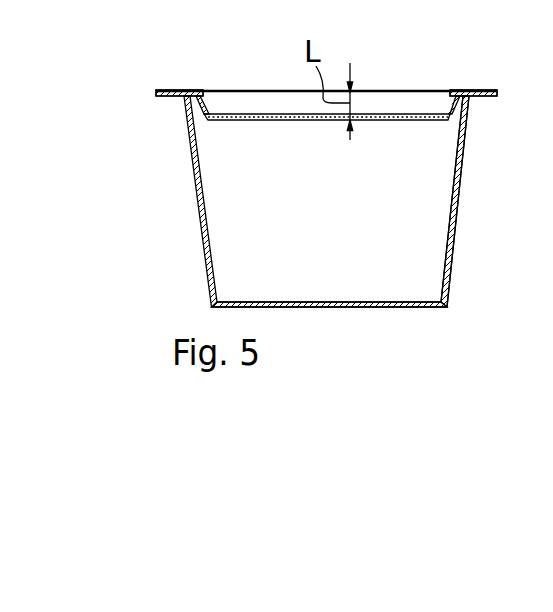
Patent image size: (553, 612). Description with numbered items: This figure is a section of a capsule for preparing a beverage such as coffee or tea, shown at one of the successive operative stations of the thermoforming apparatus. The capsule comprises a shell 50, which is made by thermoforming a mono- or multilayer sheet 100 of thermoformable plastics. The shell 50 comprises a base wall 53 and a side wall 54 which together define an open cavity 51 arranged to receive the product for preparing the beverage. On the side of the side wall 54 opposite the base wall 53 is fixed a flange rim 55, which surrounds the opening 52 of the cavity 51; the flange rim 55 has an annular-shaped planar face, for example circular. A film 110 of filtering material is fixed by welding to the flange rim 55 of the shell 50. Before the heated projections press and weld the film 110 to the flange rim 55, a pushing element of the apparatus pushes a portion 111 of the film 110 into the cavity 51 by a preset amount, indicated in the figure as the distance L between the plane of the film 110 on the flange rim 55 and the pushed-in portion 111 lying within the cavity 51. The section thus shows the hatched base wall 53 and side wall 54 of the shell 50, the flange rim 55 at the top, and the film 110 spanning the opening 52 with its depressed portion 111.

The shell 50 is at (447, 306).
The cavity 51 is at (336, 239).
The opening 52 is at (205, 104).
The base wall 53 is at (352, 308).
The side wall 54 is at (454, 227).
The flange rim 55 is at (182, 100).
The sheet 100 is at (492, 96).
The film 110 is at (490, 95).
The portion of the film 111 is at (253, 114).